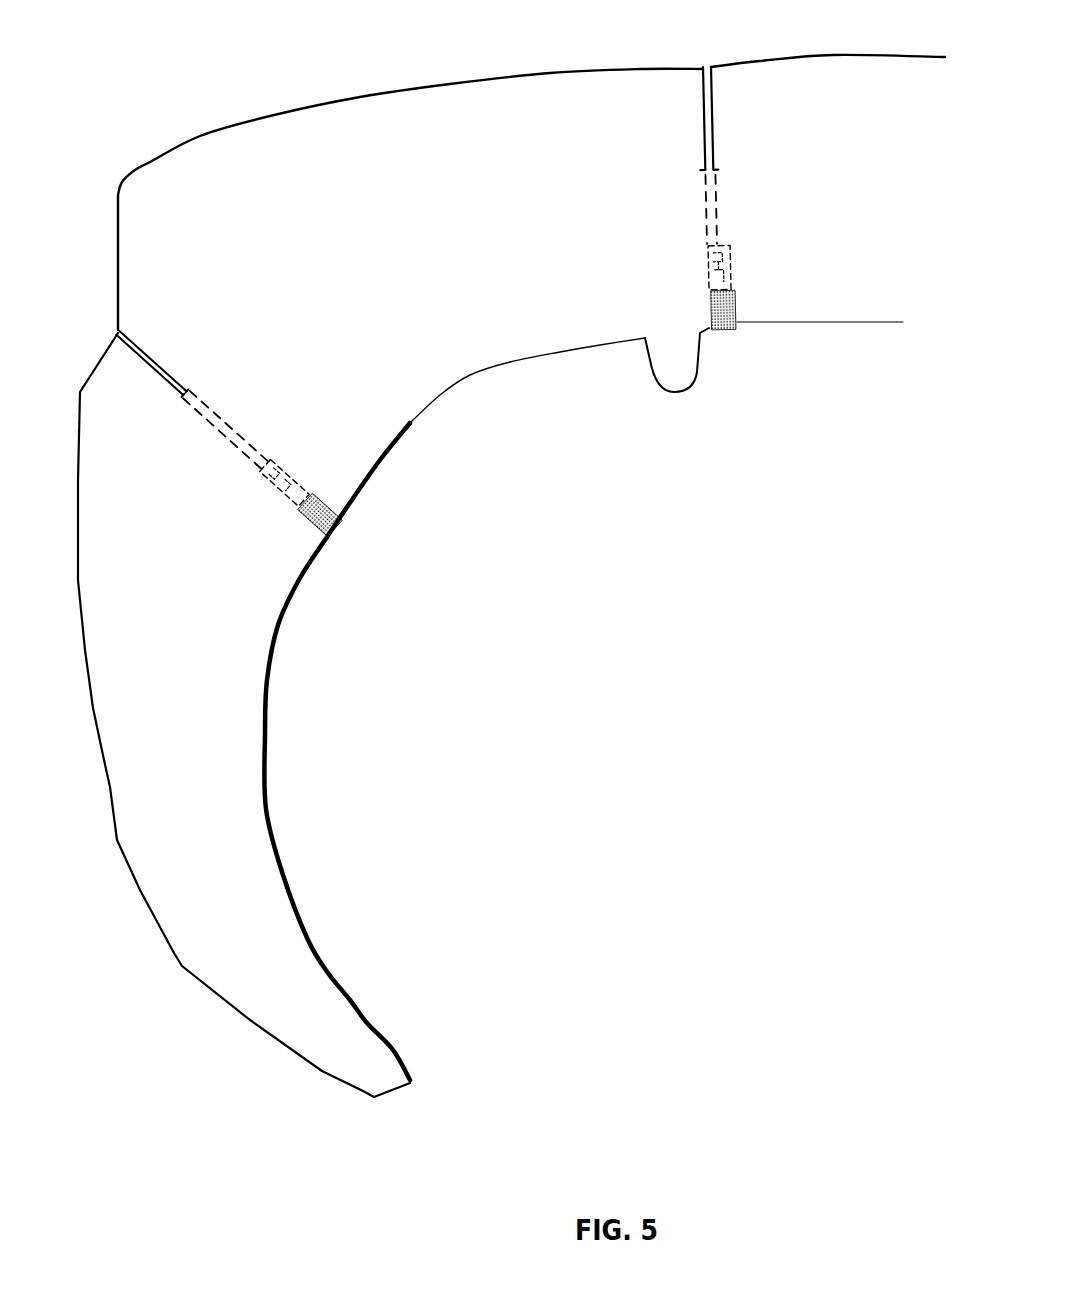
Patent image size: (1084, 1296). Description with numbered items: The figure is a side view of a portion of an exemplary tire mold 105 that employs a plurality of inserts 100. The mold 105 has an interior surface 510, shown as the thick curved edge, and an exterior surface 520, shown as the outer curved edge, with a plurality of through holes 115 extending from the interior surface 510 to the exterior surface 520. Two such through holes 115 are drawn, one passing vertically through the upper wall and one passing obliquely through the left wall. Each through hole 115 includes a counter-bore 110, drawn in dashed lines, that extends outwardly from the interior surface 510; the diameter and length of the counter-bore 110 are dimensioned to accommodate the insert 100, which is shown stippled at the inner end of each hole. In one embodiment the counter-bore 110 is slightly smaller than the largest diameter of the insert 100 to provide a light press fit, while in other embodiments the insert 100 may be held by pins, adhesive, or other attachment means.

The tire mold 105 is at (143, 90).
The exterior surface 520 is at (332, 102).
The through hole 115 is at (705, 121).
The counter-bore 110 is at (722, 217).
The insert 100 is at (734, 311).
The interior surface 510 is at (400, 443).